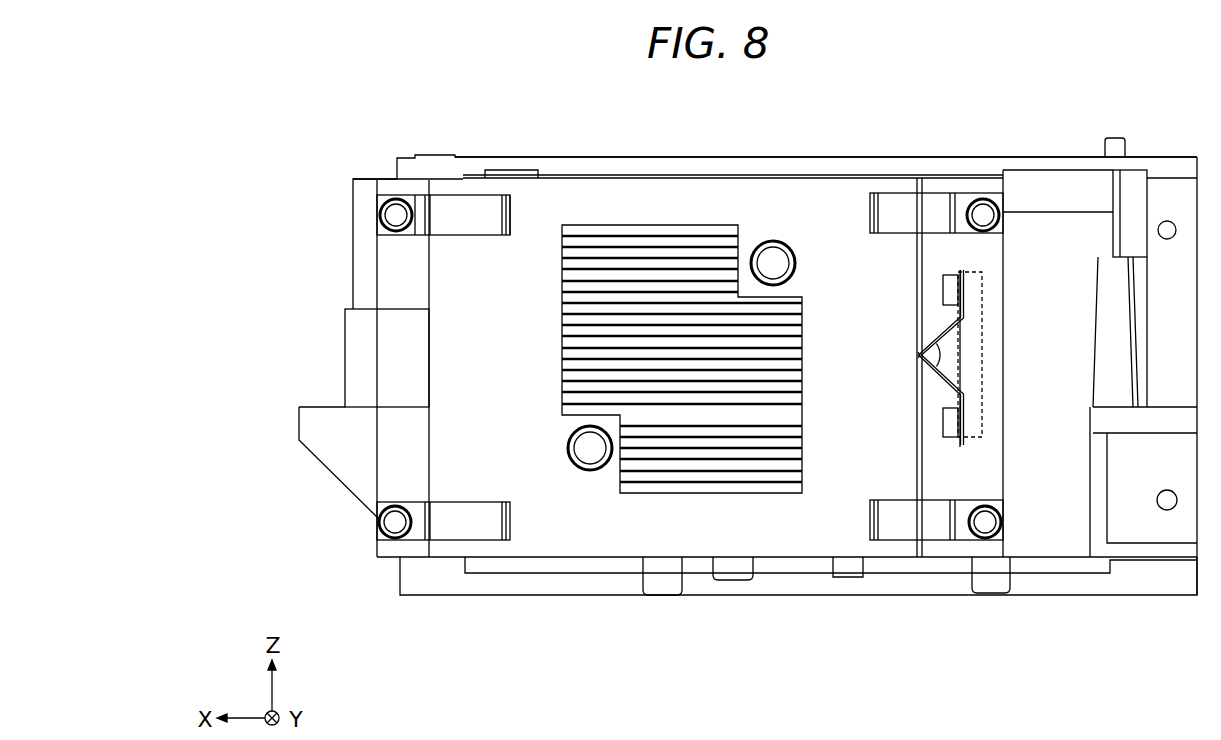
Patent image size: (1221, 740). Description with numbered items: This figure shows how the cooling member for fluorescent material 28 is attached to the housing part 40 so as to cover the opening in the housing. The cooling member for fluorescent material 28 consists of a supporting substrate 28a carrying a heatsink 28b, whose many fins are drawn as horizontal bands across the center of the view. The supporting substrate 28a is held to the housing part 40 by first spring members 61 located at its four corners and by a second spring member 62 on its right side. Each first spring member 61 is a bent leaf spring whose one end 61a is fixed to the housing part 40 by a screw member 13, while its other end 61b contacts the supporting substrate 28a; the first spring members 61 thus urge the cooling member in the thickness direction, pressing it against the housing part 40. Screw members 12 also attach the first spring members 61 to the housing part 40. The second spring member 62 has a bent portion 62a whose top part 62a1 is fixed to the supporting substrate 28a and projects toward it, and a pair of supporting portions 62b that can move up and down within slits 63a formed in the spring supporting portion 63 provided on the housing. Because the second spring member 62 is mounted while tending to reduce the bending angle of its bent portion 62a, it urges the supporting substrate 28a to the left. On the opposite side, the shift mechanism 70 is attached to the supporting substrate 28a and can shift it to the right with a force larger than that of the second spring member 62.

The screw member 12 is at (773, 263).
The screw member 13 is at (393, 212).
The cooling member for fluorescent material 28 is at (719, 470).
The supporting substrate 28a is at (825, 540).
The heatsink 28b is at (768, 472).
The housing part 40 is at (645, 157).
The first spring member 61 is at (475, 215).
The one end of first spring member 61a is at (415, 207).
The other end of first spring member 61b is at (512, 213).
The second spring member 62 is at (953, 355).
The bent portion 62a is at (943, 382).
The top part of bent portion 62a1 is at (918, 355).
The supporting portion 62b is at (962, 290).
The spring supporting portion 63 is at (1023, 365).
The slit 63a is at (965, 293).
The shift mechanism 70 is at (360, 348).